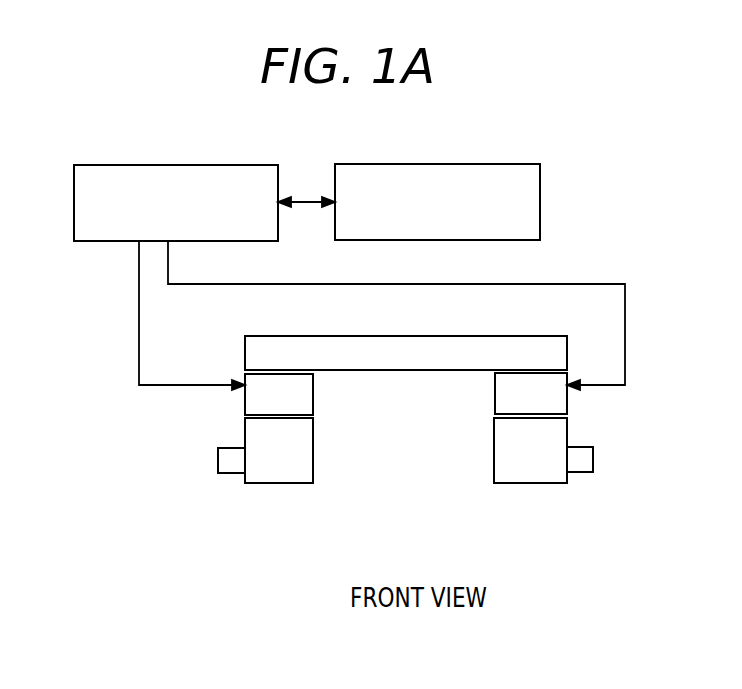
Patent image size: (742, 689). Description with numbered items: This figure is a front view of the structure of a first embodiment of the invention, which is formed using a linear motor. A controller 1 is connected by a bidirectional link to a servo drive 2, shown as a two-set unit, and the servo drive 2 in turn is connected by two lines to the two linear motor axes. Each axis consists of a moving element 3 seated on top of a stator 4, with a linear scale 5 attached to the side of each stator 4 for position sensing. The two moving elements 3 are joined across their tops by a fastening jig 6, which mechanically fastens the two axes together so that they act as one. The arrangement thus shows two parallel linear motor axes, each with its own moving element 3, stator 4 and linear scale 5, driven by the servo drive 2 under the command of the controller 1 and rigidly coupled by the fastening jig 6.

The controller 1 is at (460, 164).
The servo drive 2 is at (200, 165).
The moving element 3 is at (313, 390).
The stator 4 is at (313, 475).
The linear scale 5 is at (218, 460).
The fastening jig 6 is at (352, 336).